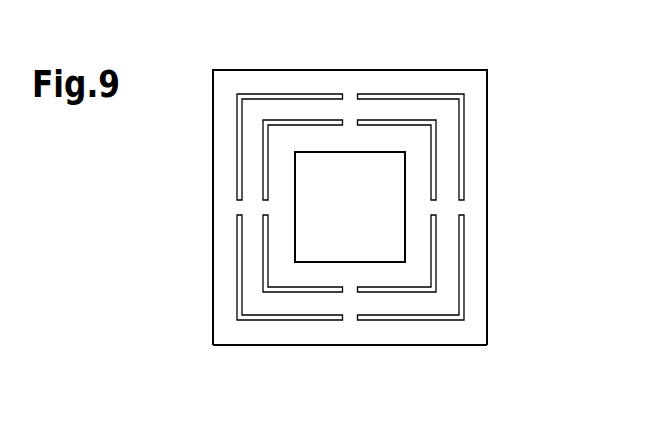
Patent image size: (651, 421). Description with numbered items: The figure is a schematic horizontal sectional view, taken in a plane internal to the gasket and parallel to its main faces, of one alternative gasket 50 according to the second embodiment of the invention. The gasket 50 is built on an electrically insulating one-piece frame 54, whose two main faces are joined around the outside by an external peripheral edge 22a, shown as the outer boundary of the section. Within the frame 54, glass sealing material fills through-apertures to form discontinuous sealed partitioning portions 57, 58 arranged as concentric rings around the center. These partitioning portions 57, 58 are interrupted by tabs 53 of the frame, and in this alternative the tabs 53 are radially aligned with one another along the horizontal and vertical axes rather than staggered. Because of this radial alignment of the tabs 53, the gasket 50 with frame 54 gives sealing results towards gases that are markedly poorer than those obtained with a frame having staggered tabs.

The gasket 50 is at (143, 226).
The radially aligned tabs 53 is at (352, 192).
The frame 54 is at (494, 233).
The sealed partitioning portion 57 is at (237, 120).
The sealed partitioning portion 58 is at (263, 268).
The external peripheral edge 22a is at (253, 345).